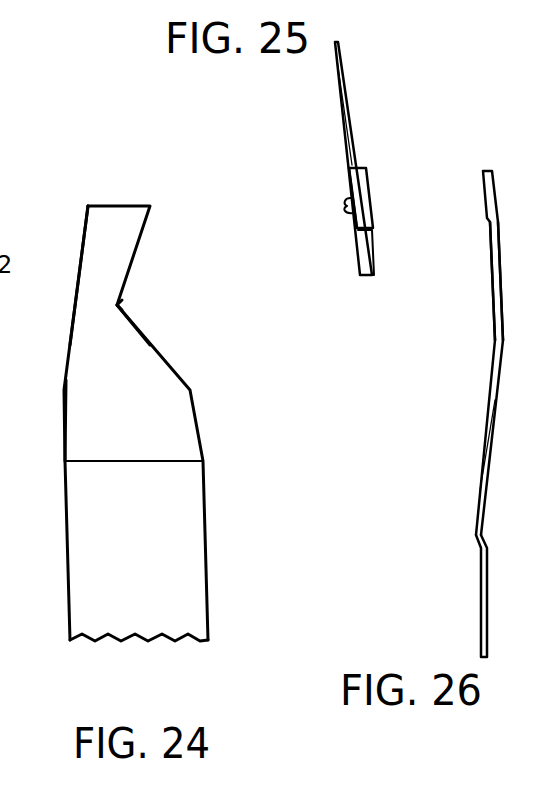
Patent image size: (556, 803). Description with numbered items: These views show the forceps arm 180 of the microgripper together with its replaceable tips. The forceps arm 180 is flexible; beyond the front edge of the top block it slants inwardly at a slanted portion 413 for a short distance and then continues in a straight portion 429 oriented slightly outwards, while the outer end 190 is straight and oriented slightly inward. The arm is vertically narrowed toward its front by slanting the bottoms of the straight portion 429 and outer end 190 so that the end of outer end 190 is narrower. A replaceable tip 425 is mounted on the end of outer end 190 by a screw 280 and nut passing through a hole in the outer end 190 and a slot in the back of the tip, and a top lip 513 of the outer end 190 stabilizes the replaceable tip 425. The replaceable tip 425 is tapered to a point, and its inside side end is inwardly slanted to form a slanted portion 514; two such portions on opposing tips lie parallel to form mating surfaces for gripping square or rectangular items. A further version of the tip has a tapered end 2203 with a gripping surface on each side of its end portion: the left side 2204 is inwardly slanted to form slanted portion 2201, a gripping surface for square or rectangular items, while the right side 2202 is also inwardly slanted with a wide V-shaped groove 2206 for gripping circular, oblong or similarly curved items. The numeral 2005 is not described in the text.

In FIG. 24, the slanted portion 2201 is at (198, 423).
In FIG. 24, the right side 2202 is at (141, 307).
In FIG. 24, the tapered end 2203 is at (99, 360).
In FIG. 24, the left side 2204 is at (82, 425).
In FIG. 24, the wide V-shaped groove 2206 is at (120, 304).
In FIG. 24, the blade base 2005 is at (66, 595).
In FIG. 25, the slanted portion 514 is at (340, 67).
In FIG. 25, the replaceable tip 425 is at (340, 118).
In FIG. 25, the top lip 513 is at (357, 168).
In FIG. 26, the top lip 513 is at (494, 190).
In FIG. 25, the outer end 190 is at (367, 238).
In FIG. 26, the outer end 190 is at (496, 277).
In FIG. 25, the screw 280 is at (346, 205).
In FIG. 25, the forceps arm 180 is at (375, 256).
In FIG. 26, the forceps arm 180 is at (477, 490).
In FIG. 26, the straight portion 429 is at (485, 427).
In FIG. 26, the slanted portion 413 is at (486, 540).